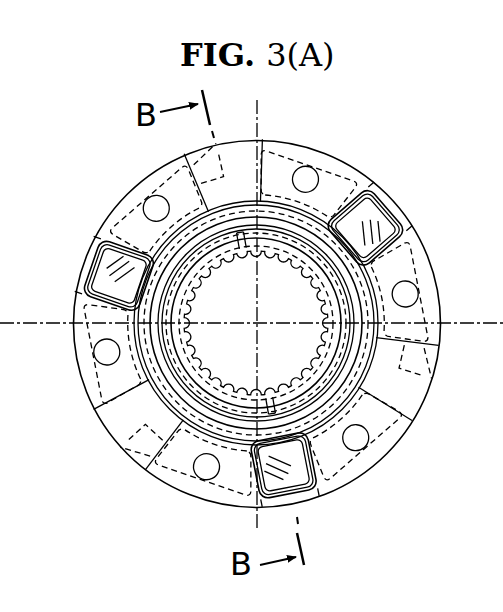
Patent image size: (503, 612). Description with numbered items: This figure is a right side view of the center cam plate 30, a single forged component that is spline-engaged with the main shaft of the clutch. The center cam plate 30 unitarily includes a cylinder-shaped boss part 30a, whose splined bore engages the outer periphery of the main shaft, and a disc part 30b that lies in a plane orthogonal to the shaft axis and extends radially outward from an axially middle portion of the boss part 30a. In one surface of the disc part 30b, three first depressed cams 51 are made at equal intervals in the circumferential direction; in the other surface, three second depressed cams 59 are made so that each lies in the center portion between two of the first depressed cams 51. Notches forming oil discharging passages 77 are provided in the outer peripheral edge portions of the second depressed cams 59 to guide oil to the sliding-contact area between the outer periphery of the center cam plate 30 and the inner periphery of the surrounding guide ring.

The center cam plate 30 is at (358, 168).
The boss part 30a is at (313, 268).
The disc part 30b is at (268, 158).
The first depressed cams 51 is at (198, 162).
The second depressed cams 59 is at (385, 238).
The oil discharging passage 77 is at (380, 203).